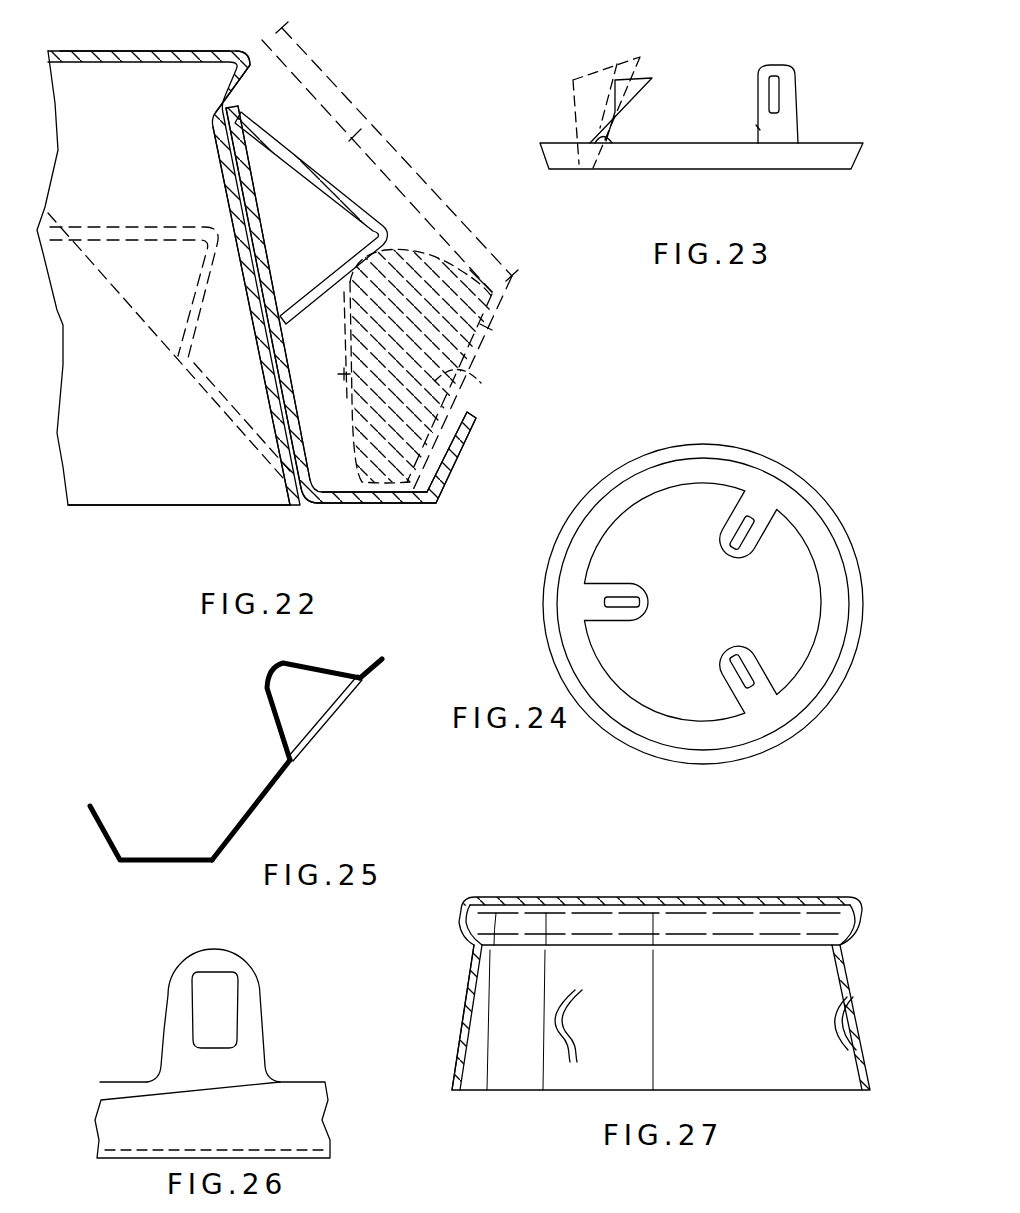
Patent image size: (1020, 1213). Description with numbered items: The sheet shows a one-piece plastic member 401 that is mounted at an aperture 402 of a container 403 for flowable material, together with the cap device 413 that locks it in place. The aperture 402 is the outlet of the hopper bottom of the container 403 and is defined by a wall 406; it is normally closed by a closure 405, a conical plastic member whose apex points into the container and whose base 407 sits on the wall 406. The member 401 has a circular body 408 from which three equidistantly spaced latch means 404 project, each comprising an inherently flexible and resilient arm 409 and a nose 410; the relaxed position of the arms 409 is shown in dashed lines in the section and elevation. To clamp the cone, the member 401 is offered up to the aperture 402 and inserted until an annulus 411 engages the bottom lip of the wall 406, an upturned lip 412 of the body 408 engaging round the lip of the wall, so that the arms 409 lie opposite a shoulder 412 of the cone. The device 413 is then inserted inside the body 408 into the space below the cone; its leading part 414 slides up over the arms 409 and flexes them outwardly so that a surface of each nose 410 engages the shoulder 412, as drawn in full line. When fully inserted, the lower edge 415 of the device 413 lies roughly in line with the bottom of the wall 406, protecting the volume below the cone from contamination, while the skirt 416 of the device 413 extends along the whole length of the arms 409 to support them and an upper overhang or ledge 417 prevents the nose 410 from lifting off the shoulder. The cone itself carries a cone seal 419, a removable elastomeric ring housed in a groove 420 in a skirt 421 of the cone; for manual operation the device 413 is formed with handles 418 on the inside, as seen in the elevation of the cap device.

In FIG. 22, the member 401 is at (346, 524).
In FIG. 23, the member 401 is at (701, 125).
In FIG. 24, the member 401 is at (708, 597).
In FIG. 25, the member 401 is at (226, 777).
In FIG. 26, the member 401 is at (340, 1143).
In FIG. 22, the aperture 402 is at (300, 510).
In FIG. 22, the container 403 is at (449, 107).
In FIG. 22, the latch means 404 is at (352, 190).
In FIG. 23, the latch means 404 is at (806, 86).
In FIG. 24, the latch means 404 is at (702, 602).
In FIG. 25, the latch means 404 is at (279, 759).
In FIG. 26, the latch means 404 is at (242, 1041).
In FIG. 22, the closure 405 is at (360, 130).
In FIG. 22, the wall 406 is at (494, 330).
In FIG. 22, the base 407 is at (486, 286).
In FIG. 22, the circular body 408 is at (399, 511).
In FIG. 23, the circular body 408 is at (693, 163).
In FIG. 24, the circular body 408 is at (823, 537).
In FIG. 22, the arm 409 is at (234, 413).
In FIG. 23, the arm 409 is at (760, 128).
In FIG. 24, the arm 409 is at (728, 496).
In FIG. 25, the arm 409 is at (254, 805).
In FIG. 26, the arm 409 is at (252, 1063).
In FIG. 22, the nose 410 is at (370, 210).
In FIG. 23, the nose 410 is at (770, 90).
In FIG. 24, the nose 410 is at (730, 532).
In FIG. 25, the nose 410 is at (277, 727).
In FIG. 26, the nose 410 is at (250, 1010).
In FIG. 22, the annulus 411 is at (373, 504).
In FIG. 25, the annulus 411 is at (148, 866).
In FIG. 22, the upturned lip / shoulder 412 is at (466, 433).
In FIG. 22, the device 413 is at (135, 122).
In FIG. 27, the device 413 is at (630, 973).
In FIG. 22, the leading part 414 is at (286, 72).
In FIG. 27, the leading part 414 is at (465, 899).
In FIG. 22, the lower edge 415 is at (138, 506).
In FIG. 22, the skirt 416 is at (222, 170).
In FIG. 27, the skirt 416 is at (460, 1052).
In FIG. 22, the overhang or ledge 417 is at (240, 68).
In FIG. 27, the overhang or ledge 417 is at (460, 918).
In FIG. 27, the fold / crease 418 is at (578, 1037).
In FIG. 22, the cone seal 419 is at (481, 378).
In FIG. 22, the groove 420 is at (350, 408).
In FIG. 22, the skirt 421 is at (340, 375).